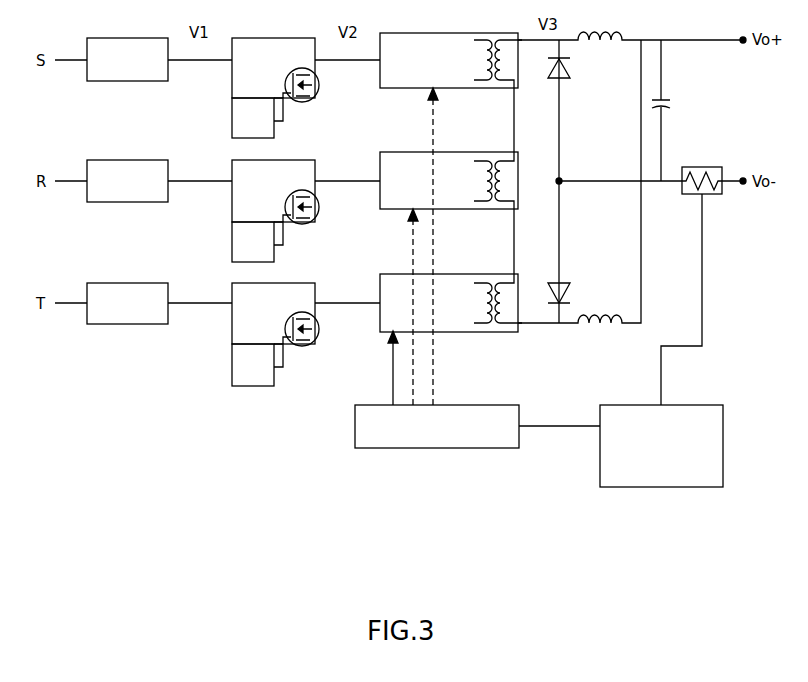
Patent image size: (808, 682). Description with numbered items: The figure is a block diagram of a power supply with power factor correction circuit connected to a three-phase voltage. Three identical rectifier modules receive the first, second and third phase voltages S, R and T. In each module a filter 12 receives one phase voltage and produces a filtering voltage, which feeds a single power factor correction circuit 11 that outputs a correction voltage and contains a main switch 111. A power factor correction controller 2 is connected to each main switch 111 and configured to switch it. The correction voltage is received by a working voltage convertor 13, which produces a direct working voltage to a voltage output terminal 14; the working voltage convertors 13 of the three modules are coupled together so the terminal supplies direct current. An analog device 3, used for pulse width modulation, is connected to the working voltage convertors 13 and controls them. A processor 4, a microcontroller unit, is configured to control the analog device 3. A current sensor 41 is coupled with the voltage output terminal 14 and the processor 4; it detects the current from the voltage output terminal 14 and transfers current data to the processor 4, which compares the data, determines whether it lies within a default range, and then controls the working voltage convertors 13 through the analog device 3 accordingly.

The filter 12 is at (127, 181).
The single power factor correction circuit 11 is at (273, 191).
The main switch 111 is at (318, 96).
The power factor correction controller 2 is at (257, 242).
The working voltage convertor 13 is at (451, 182).
The voltage output terminal 14 is at (646, 177).
The current sensor 41 is at (714, 167).
The analog device 3 is at (477, 268).
The processor 4 is at (661, 446).